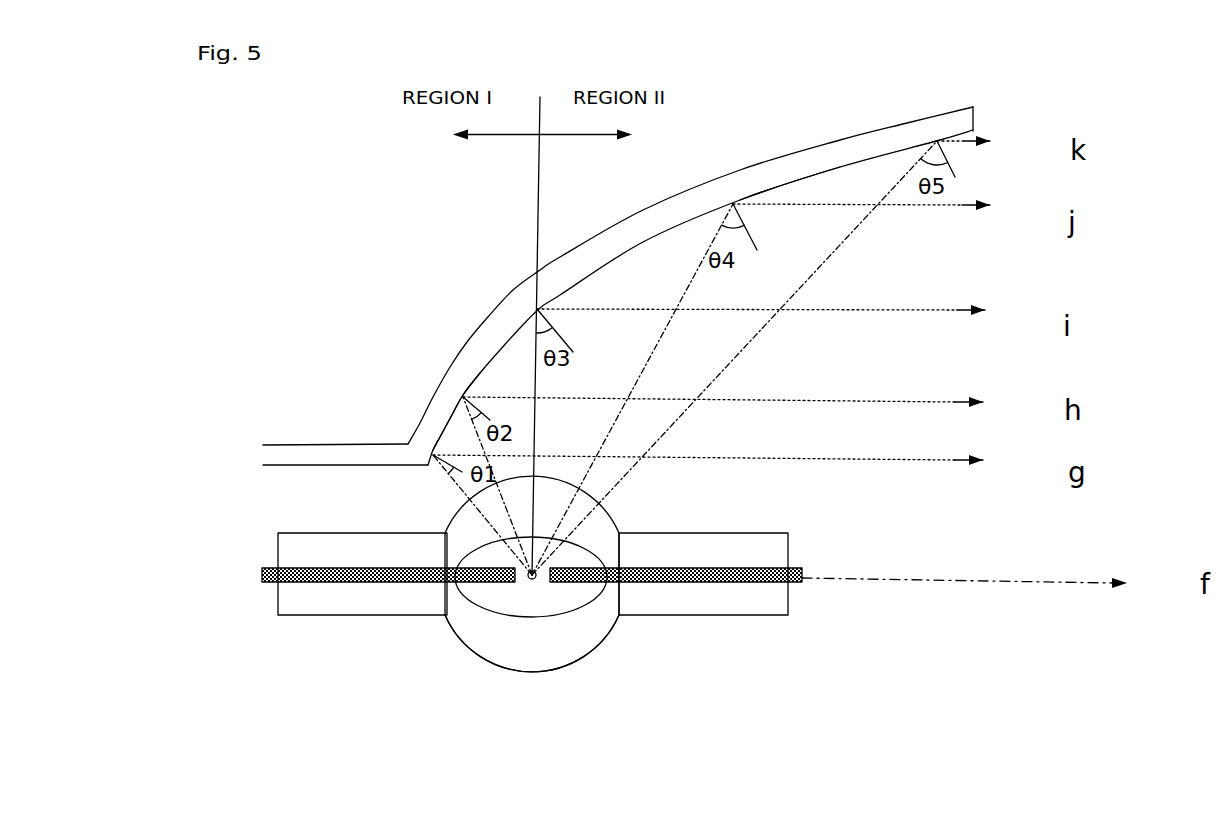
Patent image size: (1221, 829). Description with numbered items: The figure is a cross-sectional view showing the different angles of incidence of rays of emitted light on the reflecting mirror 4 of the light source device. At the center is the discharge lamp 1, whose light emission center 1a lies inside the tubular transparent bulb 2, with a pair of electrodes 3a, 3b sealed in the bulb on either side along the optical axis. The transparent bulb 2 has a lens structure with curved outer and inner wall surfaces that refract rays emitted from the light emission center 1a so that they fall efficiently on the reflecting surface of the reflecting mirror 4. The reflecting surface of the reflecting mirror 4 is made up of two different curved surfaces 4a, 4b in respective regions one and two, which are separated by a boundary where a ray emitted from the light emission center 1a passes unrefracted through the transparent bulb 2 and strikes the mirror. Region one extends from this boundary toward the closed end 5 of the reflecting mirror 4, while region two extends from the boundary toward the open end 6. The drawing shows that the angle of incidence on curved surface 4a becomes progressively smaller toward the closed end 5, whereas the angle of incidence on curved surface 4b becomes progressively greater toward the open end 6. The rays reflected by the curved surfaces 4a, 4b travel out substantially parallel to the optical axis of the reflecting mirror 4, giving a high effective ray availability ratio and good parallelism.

The discharge lamp 1 is at (503, 678).
The light emission center 1a is at (517, 590).
The transparent bulb 2 is at (558, 672).
The electrode 3a is at (270, 585).
The electrode 3b is at (795, 585).
The reflecting mirror 4 is at (484, 315).
The curved surface 4a is at (482, 367).
The curved surface 4b is at (762, 190).
The closed end 5 is at (408, 442).
The open end 6 is at (973, 107).